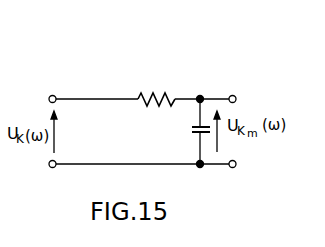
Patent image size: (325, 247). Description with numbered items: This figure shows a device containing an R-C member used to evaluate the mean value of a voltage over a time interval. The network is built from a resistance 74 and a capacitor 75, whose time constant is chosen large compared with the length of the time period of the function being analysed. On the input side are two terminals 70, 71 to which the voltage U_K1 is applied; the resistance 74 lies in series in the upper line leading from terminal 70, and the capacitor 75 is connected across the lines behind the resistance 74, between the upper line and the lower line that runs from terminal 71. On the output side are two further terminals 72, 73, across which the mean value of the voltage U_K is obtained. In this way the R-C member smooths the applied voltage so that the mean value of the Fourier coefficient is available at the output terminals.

The terminal 70 is at (49, 98).
The terminal 71 is at (49, 164).
The terminal 72 is at (236, 97).
The terminal 73 is at (236, 163).
The resistance 74 is at (147, 84).
The capacitor 75 is at (191, 130).